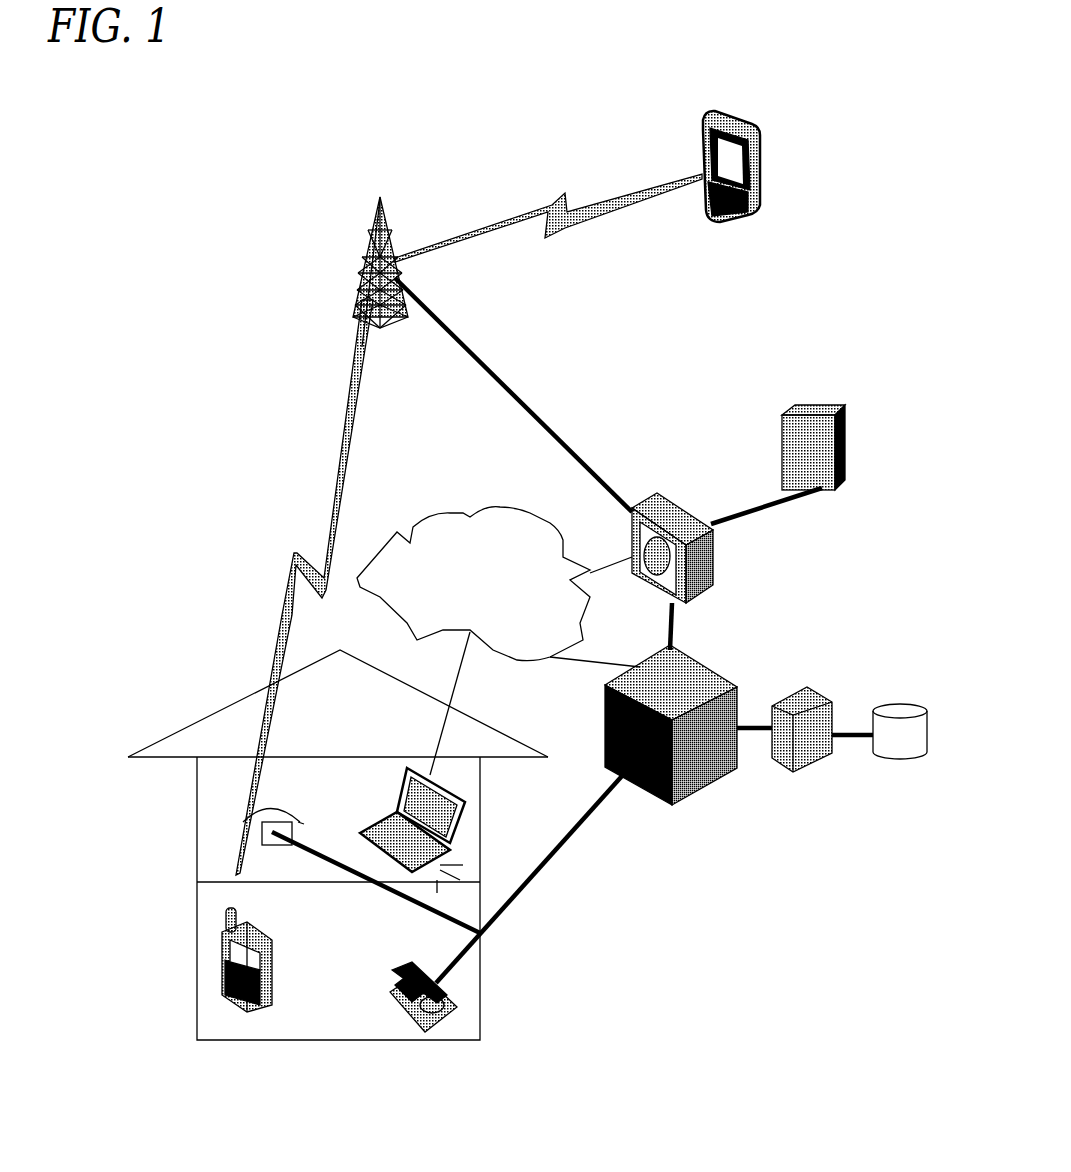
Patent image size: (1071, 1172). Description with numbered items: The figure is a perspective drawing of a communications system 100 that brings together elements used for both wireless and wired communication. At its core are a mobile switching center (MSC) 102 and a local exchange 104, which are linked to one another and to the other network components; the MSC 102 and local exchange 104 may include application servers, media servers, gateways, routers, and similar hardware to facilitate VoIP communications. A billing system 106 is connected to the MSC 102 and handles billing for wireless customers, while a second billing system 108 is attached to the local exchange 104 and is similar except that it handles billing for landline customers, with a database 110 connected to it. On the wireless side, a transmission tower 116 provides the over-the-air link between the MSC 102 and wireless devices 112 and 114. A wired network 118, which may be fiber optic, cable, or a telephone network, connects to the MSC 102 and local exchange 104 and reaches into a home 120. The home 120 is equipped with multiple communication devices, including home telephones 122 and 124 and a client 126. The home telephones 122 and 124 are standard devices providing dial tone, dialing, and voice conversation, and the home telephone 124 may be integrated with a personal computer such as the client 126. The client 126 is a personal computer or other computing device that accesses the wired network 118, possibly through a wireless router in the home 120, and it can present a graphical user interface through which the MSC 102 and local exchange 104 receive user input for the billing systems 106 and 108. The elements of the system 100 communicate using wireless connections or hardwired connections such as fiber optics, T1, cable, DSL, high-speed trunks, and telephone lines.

The communications system 100 is at (195, 115).
The mobile switching center 102 is at (657, 492).
The local exchange 104 is at (677, 808).
The billing system 106 is at (800, 440).
The billing system 108 is at (820, 758).
The database 110 is at (882, 704).
The wireless device 112 is at (760, 128).
The wireless device 114 is at (222, 995).
The transmission tower 116 is at (358, 297).
The wired network 118 is at (493, 609).
The home 120 is at (190, 705).
The home telephone 122 is at (463, 1012).
The home telephone 124 is at (262, 843).
The client 126 is at (468, 838).